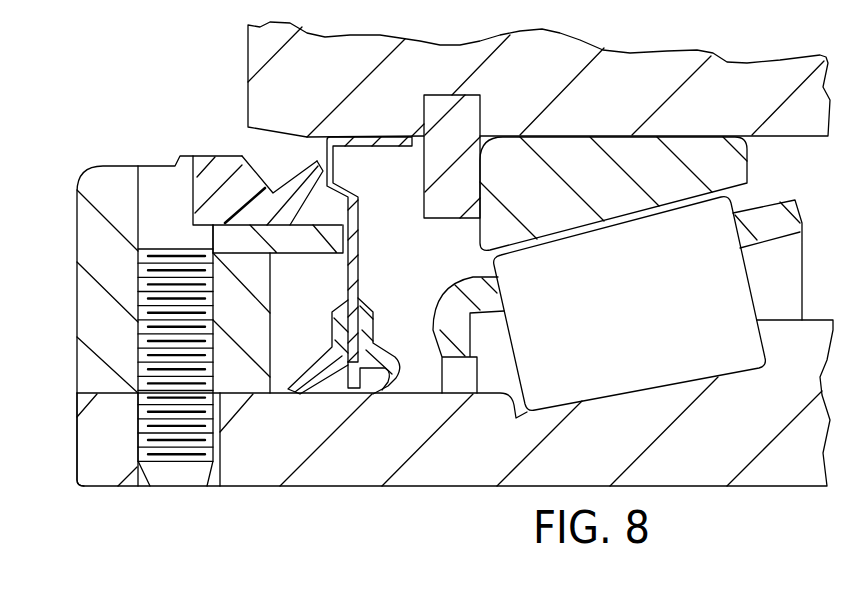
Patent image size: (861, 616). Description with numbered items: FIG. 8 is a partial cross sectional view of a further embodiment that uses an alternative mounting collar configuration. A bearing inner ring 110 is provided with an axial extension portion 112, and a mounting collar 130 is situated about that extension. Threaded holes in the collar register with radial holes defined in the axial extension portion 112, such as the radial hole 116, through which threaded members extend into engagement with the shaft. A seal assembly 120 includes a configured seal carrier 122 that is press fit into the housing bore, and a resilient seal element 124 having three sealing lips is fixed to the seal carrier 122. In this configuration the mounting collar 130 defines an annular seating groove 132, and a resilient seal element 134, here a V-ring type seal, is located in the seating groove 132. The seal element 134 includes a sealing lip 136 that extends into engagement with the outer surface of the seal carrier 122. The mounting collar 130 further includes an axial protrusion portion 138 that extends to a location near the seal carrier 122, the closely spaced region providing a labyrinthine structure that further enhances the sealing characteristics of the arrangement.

The bearing inner ring 110 is at (398, 487).
The axial extension portion 112 is at (77, 427).
The radial hole 116 is at (212, 488).
The seal assembly 120 is at (374, 278).
The seal carrier 122 is at (349, 219).
The resilient seal element 124 is at (333, 337).
The mounting collar 130 is at (118, 166).
The annular seating groove 132 is at (205, 157).
The resilient seal element 134 is at (230, 154).
The sealing lip 136 is at (298, 176).
The axial protrusion portion 138 is at (313, 254).